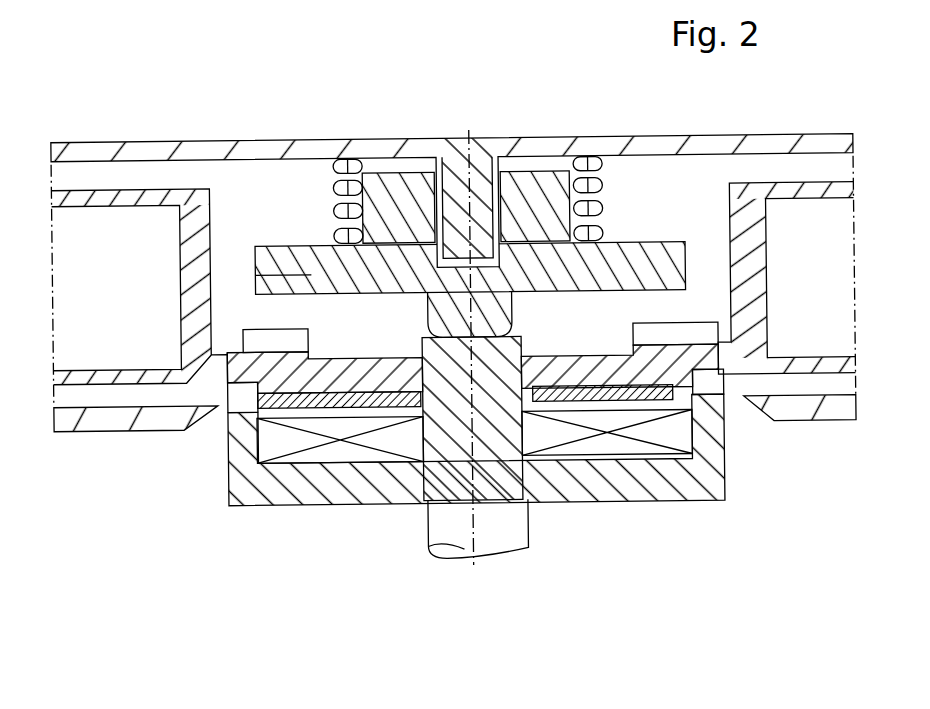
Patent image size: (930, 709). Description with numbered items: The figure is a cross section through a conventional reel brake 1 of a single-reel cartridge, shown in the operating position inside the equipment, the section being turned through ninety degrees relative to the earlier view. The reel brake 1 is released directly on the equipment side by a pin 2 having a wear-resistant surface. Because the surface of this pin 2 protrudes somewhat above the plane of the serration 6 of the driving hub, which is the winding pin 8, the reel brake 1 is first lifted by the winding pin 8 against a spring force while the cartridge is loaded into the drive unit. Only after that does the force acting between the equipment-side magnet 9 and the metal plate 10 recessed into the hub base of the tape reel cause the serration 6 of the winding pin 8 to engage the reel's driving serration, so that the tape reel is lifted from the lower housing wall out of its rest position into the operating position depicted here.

The reel brake 1 is at (319, 250).
The pin 2 is at (452, 349).
The serration 6 is at (707, 385).
The winding pin 8 is at (240, 483).
The magnet 9 is at (338, 452).
The metal plate 10 is at (589, 400).